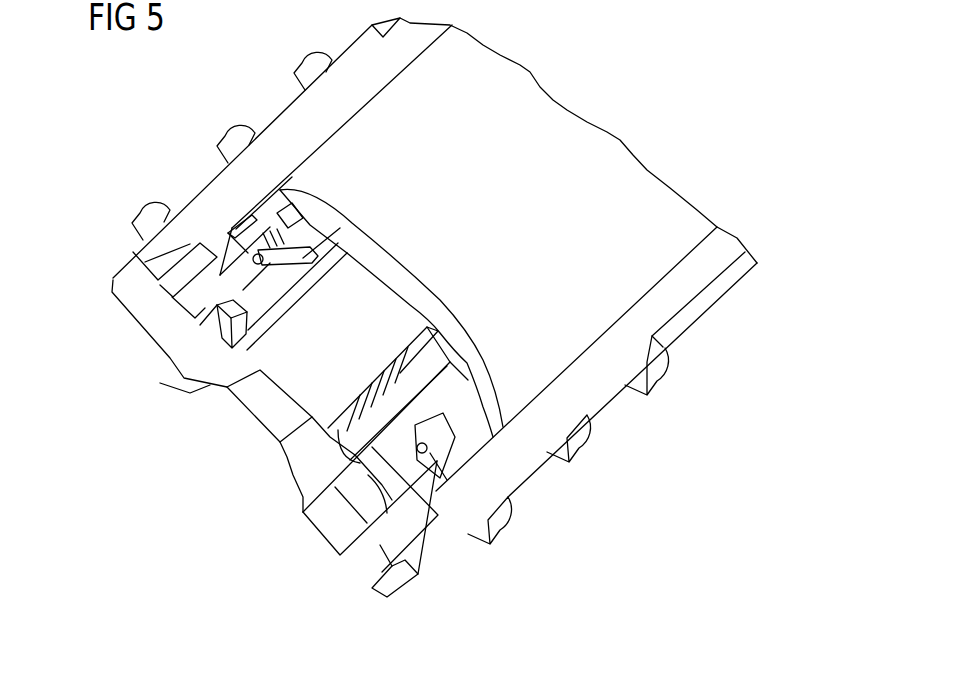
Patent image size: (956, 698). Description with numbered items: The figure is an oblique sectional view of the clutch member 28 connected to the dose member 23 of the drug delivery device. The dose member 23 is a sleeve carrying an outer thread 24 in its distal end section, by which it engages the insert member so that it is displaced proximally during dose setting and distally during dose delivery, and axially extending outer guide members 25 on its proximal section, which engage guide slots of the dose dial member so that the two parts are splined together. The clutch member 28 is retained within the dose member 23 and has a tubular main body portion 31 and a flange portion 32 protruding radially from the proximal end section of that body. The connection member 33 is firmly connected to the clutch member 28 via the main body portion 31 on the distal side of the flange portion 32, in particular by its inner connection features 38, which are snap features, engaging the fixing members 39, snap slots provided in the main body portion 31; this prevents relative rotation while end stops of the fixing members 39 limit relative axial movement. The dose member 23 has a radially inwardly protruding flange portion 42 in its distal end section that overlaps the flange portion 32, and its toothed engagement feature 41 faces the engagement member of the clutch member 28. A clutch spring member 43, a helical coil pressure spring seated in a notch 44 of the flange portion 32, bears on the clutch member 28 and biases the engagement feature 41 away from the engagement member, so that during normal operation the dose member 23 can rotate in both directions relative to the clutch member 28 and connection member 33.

The dose member 23 is at (667, 222).
The thread 24 is at (226, 146).
The guide members 25 is at (727, 285).
The clutch member 28 is at (373, 248).
The main body portion 31 is at (393, 310).
The flange portion 32 is at (350, 223).
The connection member 33 is at (160, 323).
The connection features 38 is at (212, 372).
The fixing members 39 is at (367, 410).
The engagement feature 41 is at (228, 222).
The flange portion 42 is at (186, 262).
The clutch spring member 43 is at (285, 280).
The notch 44 is at (308, 215).